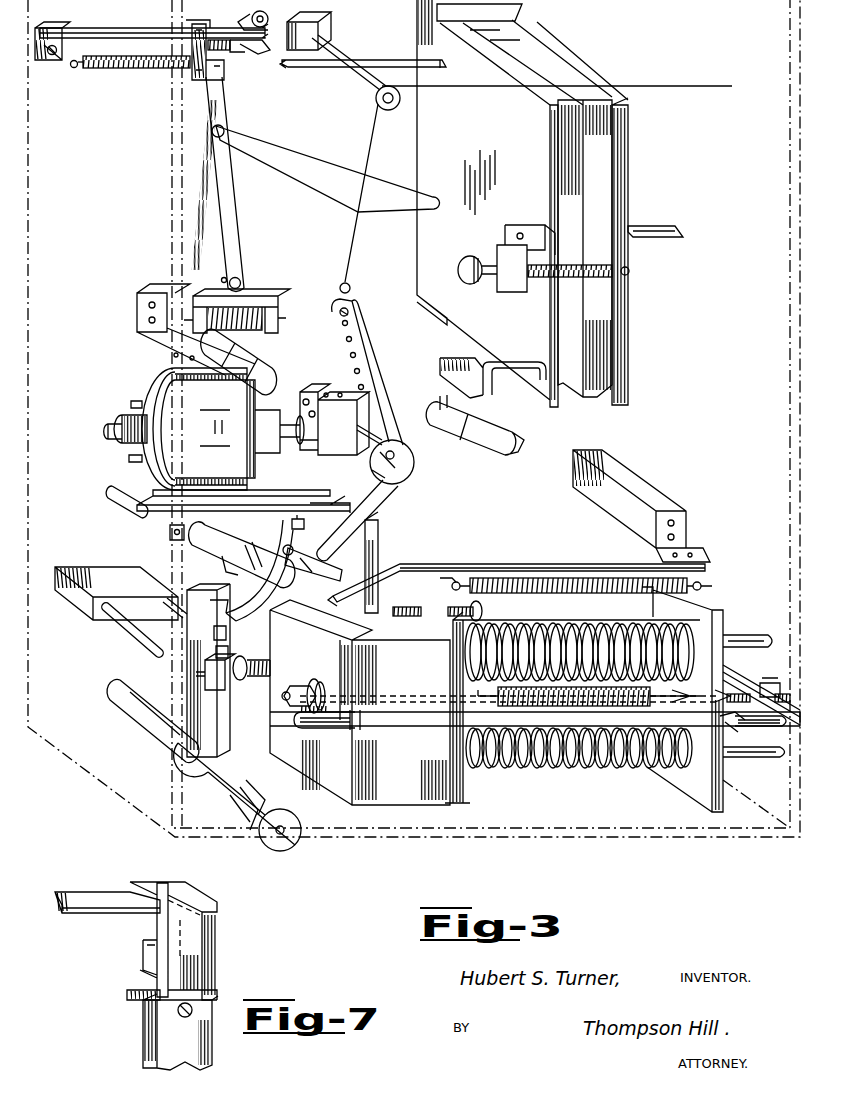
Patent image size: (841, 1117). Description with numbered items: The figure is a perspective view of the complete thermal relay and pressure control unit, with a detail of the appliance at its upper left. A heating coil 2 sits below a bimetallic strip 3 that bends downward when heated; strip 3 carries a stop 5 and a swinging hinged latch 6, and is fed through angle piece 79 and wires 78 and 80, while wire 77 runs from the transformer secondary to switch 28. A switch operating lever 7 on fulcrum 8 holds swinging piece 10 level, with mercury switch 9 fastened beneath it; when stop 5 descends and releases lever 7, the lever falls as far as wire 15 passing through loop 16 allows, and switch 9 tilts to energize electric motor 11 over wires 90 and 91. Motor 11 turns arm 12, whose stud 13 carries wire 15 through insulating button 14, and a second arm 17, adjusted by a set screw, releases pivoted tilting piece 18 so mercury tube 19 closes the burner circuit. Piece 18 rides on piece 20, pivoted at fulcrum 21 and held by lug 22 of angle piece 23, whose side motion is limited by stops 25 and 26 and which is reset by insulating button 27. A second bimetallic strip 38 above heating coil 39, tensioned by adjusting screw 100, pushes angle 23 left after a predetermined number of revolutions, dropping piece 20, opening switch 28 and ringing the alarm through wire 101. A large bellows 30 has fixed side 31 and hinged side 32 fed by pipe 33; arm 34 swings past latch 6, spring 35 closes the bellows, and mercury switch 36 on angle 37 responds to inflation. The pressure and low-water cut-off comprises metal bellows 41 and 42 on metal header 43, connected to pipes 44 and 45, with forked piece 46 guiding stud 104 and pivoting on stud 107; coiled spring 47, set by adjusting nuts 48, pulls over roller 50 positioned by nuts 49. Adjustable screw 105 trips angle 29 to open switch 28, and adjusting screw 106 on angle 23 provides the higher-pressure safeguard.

In FIG. 3, the heating coil 2 is at (134, 70).
In FIG. 3, the bimetallic strip 3 is at (111, 40).
In FIG. 7, the bimetallic strip 3 is at (102, 910).
In FIG. 3, the stop 5 is at (198, 62).
In FIG. 7, the stop 5 is at (165, 925).
In FIG. 3, the swinging hinged latch 6 is at (258, 52).
In FIG. 3, the switch operating lever 7 is at (236, 243).
In FIG. 7, the switch operating lever 7 is at (143, 1045).
In FIG. 3, the fulcrum 8 is at (241, 283).
In FIG. 3, the mercury switch 9 is at (268, 376).
In FIG. 3, the swinging piece 10 is at (262, 307).
In FIG. 3, the electric motor 11 is at (243, 387).
In FIG. 3, the arm 12 is at (364, 378).
In FIG. 3, the stud 13 is at (350, 314).
In FIG. 3, the insulating button 14 is at (352, 288).
In FIG. 3, the wire, cord or chain 15 is at (363, 150).
In FIG. 3, the loop 16 is at (340, 198).
In FIG. 3, the arm 17 is at (392, 486).
In FIG. 3, the pivoted tilting piece 18 is at (293, 551).
In FIG. 3, the mercury tube 19 is at (296, 572).
In FIG. 3, the piece 20 is at (246, 578).
In FIG. 3, the fulcrum 21 is at (172, 537).
In FIG. 3, the lug 22 is at (228, 633).
In FIG. 3, the angle piece 23 is at (220, 728).
In FIG. 3, the stop 25 is at (150, 658).
In FIG. 3, the stop 26 is at (230, 652).
In FIG. 3, the insulating button 27 is at (277, 848).
In FIG. 3, the switch 28 is at (273, 497).
In FIG. 3, the angle 29 is at (379, 536).
In FIG. 3, the bellows 30 is at (598, 205).
In FIG. 3, the side 31 is at (629, 338).
In FIG. 3, the side 32 is at (549, 322).
In FIG. 3, the pipe 33 is at (678, 240).
In FIG. 3, the arm 34 is at (316, 70).
In FIG. 3, the spring 35 is at (569, 278).
In FIG. 3, the mercury switch 36 is at (489, 450).
In FIG. 3, the angle 37 is at (512, 366).
In FIG. 3, the bimetallic strip 38 is at (452, 563).
In FIG. 3, the heating coil 39 is at (557, 596).
In FIG. 3, the metal bellows 41 is at (598, 628).
In FIG. 3, the metal bellows 42 is at (588, 760).
In FIG. 3, the metal header 43 is at (360, 702).
In FIG. 3, the pipe 44 is at (746, 636).
In FIG. 3, the pipe 45 is at (751, 758).
In FIG. 3, the forked piece 46 is at (312, 730).
In FIG. 3, the coiled spring 47 is at (655, 696).
In FIG. 3, the adjusting nuts 48 is at (304, 688).
In FIG. 3, the nuts 49 is at (758, 685).
In FIG. 3, the roller 50 is at (778, 727).
In FIG. 3, the wire 77 is at (135, 485).
In FIG. 3, the wire 78 is at (40, 58).
In FIG. 3, the angle piece 79 is at (52, 56).
In FIG. 3, the wire 80 is at (74, 68).
In FIG. 3, the wire 90 is at (131, 401).
In FIG. 3, the wire 91 is at (129, 459).
In FIG. 3, the adjusting screw 100 is at (688, 574).
In FIG. 3, the wire 101 is at (305, 525).
In FIG. 3, the stud 104 is at (358, 728).
In FIG. 3, the adjustable screw 105 is at (410, 606).
In FIG. 3, the adjusting screw 106 is at (240, 680).
In FIG. 3, the stud 107 is at (738, 727).